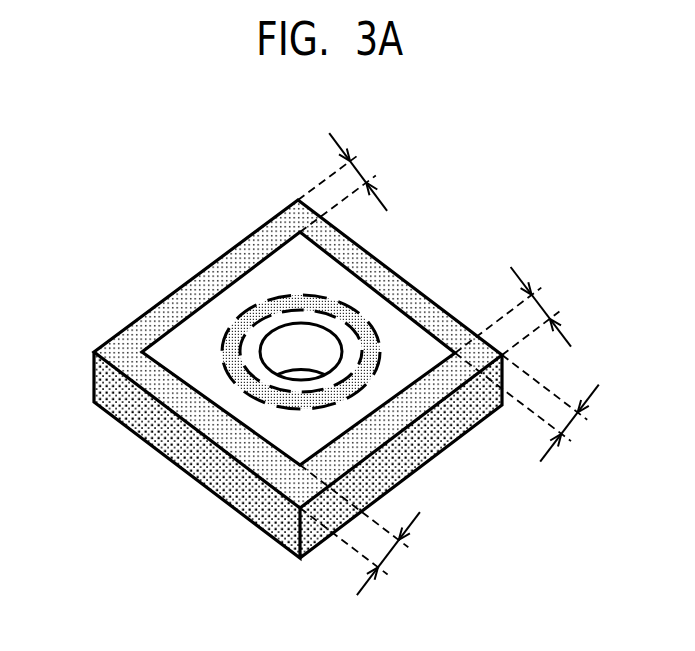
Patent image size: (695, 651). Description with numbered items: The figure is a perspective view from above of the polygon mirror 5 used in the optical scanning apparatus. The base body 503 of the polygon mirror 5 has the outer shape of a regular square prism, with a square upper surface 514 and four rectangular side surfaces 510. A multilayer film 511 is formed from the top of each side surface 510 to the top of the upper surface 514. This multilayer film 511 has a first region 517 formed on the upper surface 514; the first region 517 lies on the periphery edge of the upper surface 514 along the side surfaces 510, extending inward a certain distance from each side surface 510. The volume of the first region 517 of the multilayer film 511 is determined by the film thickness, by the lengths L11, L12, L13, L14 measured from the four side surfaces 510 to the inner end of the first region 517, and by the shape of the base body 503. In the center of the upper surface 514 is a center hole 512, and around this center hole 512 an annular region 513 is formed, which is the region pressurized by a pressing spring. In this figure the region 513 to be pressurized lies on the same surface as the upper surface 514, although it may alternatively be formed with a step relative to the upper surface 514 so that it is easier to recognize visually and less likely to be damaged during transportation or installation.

The polygon mirror 5 is at (547, 157).
The base body 503 is at (295, 442).
The side surface 510 is at (110, 345).
The multilayer film 511 is at (100, 395).
The center hole 512 is at (270, 337).
The region to be pressurized 513 is at (267, 310).
The upper surface 514 is at (284, 270).
The first region 517 is at (110, 343).
The length L11 is at (393, 562).
The length L12 is at (565, 417).
The length L13 is at (542, 312).
The length L14 is at (362, 168).